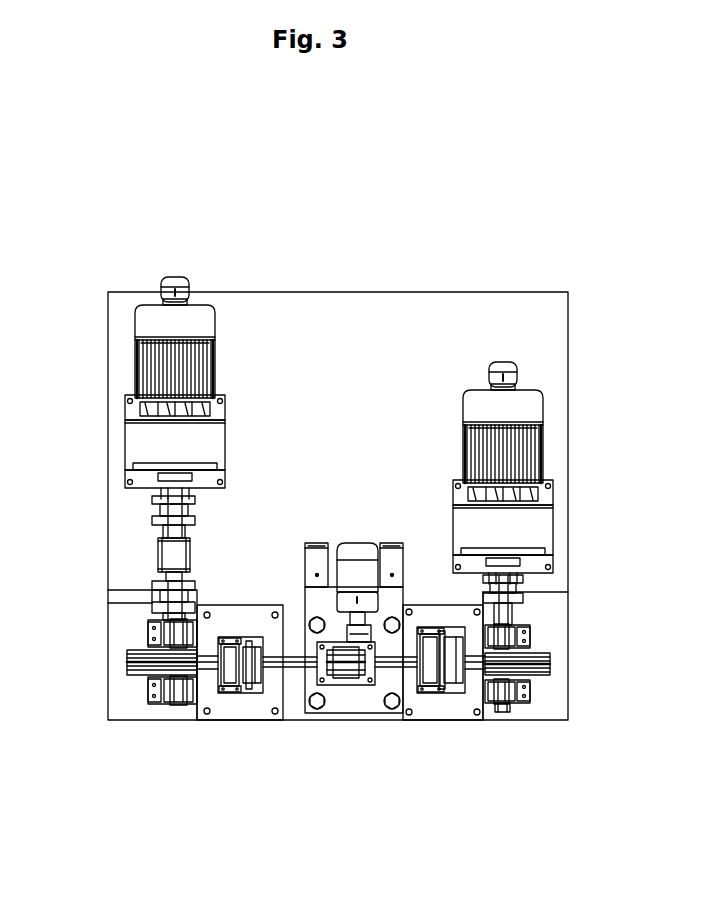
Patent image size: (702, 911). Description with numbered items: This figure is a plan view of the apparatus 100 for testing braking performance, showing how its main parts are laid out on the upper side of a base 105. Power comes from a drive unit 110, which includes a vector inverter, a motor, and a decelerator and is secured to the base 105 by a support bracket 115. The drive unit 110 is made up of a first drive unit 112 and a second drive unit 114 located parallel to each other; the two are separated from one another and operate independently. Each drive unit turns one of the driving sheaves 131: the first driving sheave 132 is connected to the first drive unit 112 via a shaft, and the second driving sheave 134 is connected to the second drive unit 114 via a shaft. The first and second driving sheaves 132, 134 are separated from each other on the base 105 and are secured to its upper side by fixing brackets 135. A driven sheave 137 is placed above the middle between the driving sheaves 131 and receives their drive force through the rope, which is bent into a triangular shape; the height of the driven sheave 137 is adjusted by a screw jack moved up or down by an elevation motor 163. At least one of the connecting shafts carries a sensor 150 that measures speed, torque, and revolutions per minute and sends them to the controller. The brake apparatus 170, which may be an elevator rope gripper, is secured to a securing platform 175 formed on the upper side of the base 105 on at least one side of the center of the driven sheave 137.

The apparatus for testing braking performance 100 is at (180, 186).
The base 105 is at (512, 310).
The drive unit 110 is at (368, 215).
The first drive unit 112 is at (183, 370).
The second drive unit 114 is at (483, 453).
The support bracket 115 is at (127, 471).
The driving sheaves 131 is at (392, 803).
The first driving sheave 132 is at (202, 672).
The second driving sheave 134 is at (520, 710).
The fixing brackets 135 is at (160, 700).
The driven sheave 137 is at (340, 648).
The sensor 150 is at (168, 557).
The elevation motor 163 is at (360, 568).
The brake apparatus 170 is at (222, 640).
The securing platform 175 is at (230, 628).